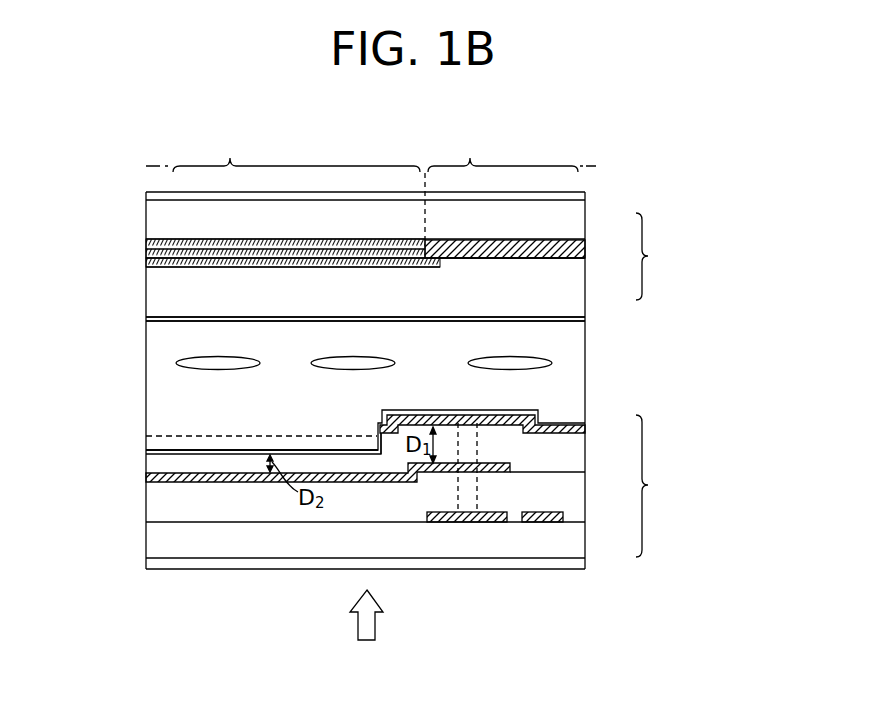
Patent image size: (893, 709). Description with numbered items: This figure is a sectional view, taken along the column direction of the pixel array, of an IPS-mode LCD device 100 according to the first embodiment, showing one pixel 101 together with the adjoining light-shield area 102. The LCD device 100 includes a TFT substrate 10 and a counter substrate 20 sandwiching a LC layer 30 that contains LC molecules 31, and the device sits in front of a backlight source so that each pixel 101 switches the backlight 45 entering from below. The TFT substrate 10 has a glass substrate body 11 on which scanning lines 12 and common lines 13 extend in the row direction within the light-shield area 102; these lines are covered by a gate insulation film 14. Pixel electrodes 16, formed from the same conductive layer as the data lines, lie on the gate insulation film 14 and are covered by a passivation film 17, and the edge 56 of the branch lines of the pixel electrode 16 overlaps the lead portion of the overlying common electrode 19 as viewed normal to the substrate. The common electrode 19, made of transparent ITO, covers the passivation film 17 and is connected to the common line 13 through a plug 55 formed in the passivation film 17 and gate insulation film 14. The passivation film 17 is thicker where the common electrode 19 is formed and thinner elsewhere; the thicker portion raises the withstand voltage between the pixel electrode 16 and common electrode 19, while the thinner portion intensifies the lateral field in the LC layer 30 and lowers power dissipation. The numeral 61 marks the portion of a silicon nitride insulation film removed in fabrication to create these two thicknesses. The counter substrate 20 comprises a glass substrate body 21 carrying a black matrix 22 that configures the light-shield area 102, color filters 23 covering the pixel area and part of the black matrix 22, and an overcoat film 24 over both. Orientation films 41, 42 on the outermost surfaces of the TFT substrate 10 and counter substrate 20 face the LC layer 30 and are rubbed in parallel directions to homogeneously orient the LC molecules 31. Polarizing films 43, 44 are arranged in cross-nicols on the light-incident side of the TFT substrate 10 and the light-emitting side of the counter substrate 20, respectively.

The LCD device 100 is at (642, 118).
The polarizing film 44 is at (163, 198).
The pixel 101 is at (283, 152).
The light-shield area 102 is at (510, 186).
The counter substrate 20 is at (661, 256).
The glass substrate body 21 is at (570, 229).
The black matrix 22 is at (573, 252).
The color filters 23 is at (310, 263).
The overcoat film 24 is at (572, 287).
The orientation film 42 is at (168, 322).
The LC layer 30 is at (570, 360).
The LC molecules 31 is at (218, 366).
The removed portion of transparent insulation film 61 is at (294, 434).
The orientation film 41 is at (150, 450).
The common electrodes 19 is at (587, 429).
The plugs 55 is at (478, 448).
The passivation film 17 is at (570, 460).
The pixel electrodes 16 is at (490, 473).
The edge of branch lines of pixel electrode 56 is at (452, 484).
The gate insulation film 14 is at (572, 512).
The common lines 13 is at (458, 523).
The scanning lines 12 is at (548, 523).
The glass substrate body 11 is at (572, 541).
The polarizing film 43 is at (170, 570).
The TFT substrate 10 is at (662, 486).
The backlight 45 is at (376, 626).